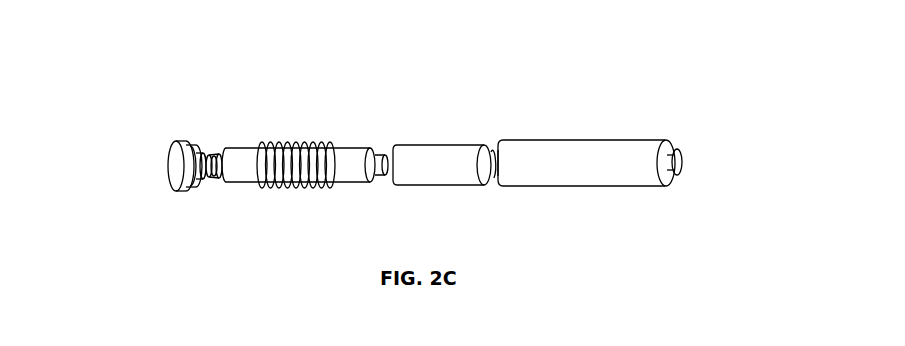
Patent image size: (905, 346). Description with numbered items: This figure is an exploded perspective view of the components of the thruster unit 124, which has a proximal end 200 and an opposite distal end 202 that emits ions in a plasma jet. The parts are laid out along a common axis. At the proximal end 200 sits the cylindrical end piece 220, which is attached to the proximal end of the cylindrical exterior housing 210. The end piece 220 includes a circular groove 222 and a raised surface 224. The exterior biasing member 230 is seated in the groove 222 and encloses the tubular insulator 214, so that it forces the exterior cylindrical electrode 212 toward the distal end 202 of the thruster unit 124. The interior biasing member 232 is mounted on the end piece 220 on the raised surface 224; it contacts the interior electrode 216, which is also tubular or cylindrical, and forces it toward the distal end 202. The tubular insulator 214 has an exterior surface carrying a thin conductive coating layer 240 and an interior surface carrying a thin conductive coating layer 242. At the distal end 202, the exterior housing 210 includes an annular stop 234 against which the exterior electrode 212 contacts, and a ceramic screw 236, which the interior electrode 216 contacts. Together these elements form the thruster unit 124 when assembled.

The thruster unit 124 is at (243, 97).
The proximal end 200 is at (170, 197).
The distal end 202 is at (695, 174).
The cylindrical exterior housing 210 is at (599, 140).
The exterior cylindrical electrode 212 is at (343, 146).
The tubular insulator 214 is at (499, 132).
The interior electrode 216 is at (383, 148).
The cylindrical end piece 220 is at (168, 152).
The circular groove 222 is at (186, 142).
The raised surface 224 is at (198, 184).
The exterior biasing member 230 is at (291, 141).
The interior biasing member 232 is at (214, 182).
The annular stop 234 is at (664, 140).
The ceramic screw 236 is at (684, 150).
The thin conductive coating layer 240 is at (427, 146).
The thin conductive coating layer 242 is at (494, 180).